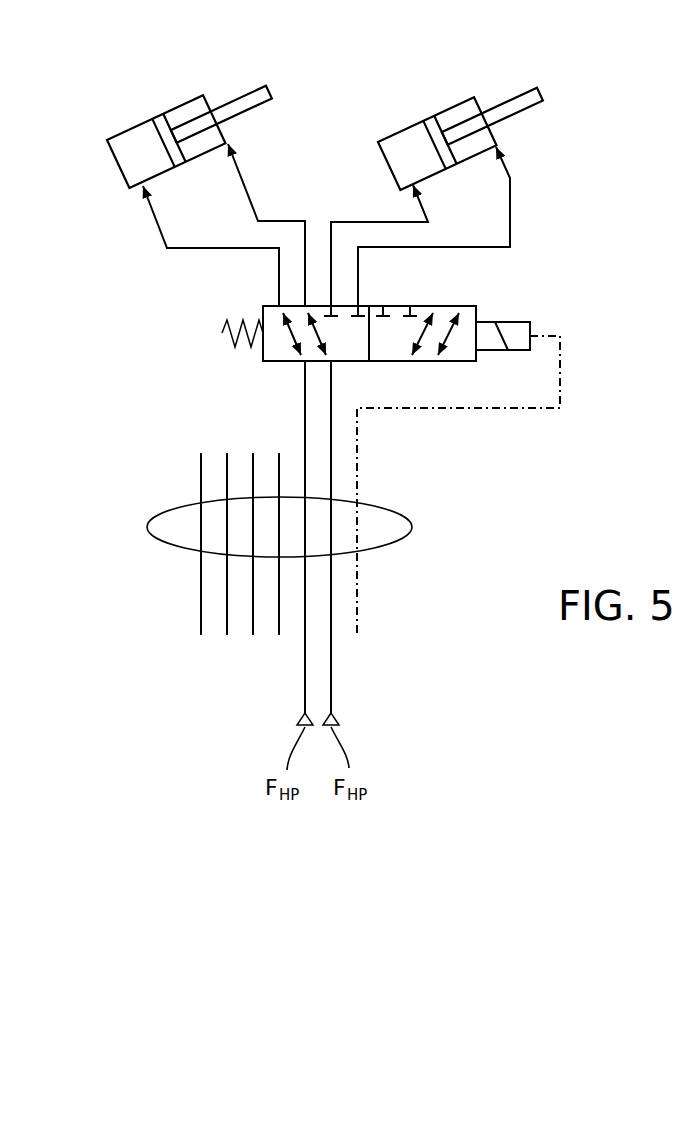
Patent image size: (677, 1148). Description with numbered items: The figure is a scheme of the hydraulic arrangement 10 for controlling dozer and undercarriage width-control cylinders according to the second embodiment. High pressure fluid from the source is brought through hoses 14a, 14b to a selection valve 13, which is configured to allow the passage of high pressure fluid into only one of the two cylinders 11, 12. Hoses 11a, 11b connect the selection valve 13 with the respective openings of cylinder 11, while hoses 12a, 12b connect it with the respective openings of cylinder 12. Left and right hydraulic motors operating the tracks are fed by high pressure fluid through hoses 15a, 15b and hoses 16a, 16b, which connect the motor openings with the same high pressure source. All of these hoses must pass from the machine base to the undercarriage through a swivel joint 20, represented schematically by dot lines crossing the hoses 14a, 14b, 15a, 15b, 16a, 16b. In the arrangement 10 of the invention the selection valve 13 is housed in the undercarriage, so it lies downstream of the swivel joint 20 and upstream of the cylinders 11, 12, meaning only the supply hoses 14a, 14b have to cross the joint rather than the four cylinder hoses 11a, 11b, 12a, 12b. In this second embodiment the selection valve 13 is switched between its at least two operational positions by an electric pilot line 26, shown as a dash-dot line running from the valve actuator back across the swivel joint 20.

The hydraulic arrangement 10 is at (545, 216).
The cylinder 11 is at (443, 105).
The cylinder 12 is at (173, 106).
The hose 11a is at (343, 222).
The hose 11b is at (477, 247).
The hose 12a is at (200, 250).
The hose 12b is at (290, 220).
The selection valve 13 is at (478, 308).
The hose 14a is at (305, 647).
The hose 14b is at (332, 673).
The hose 15a is at (253, 636).
The hose 15b is at (279, 636).
The hose 16a is at (200, 565).
The hose 16b is at (227, 596).
The swivel joint 20 is at (377, 517).
The electric pilot line 26 is at (362, 582).